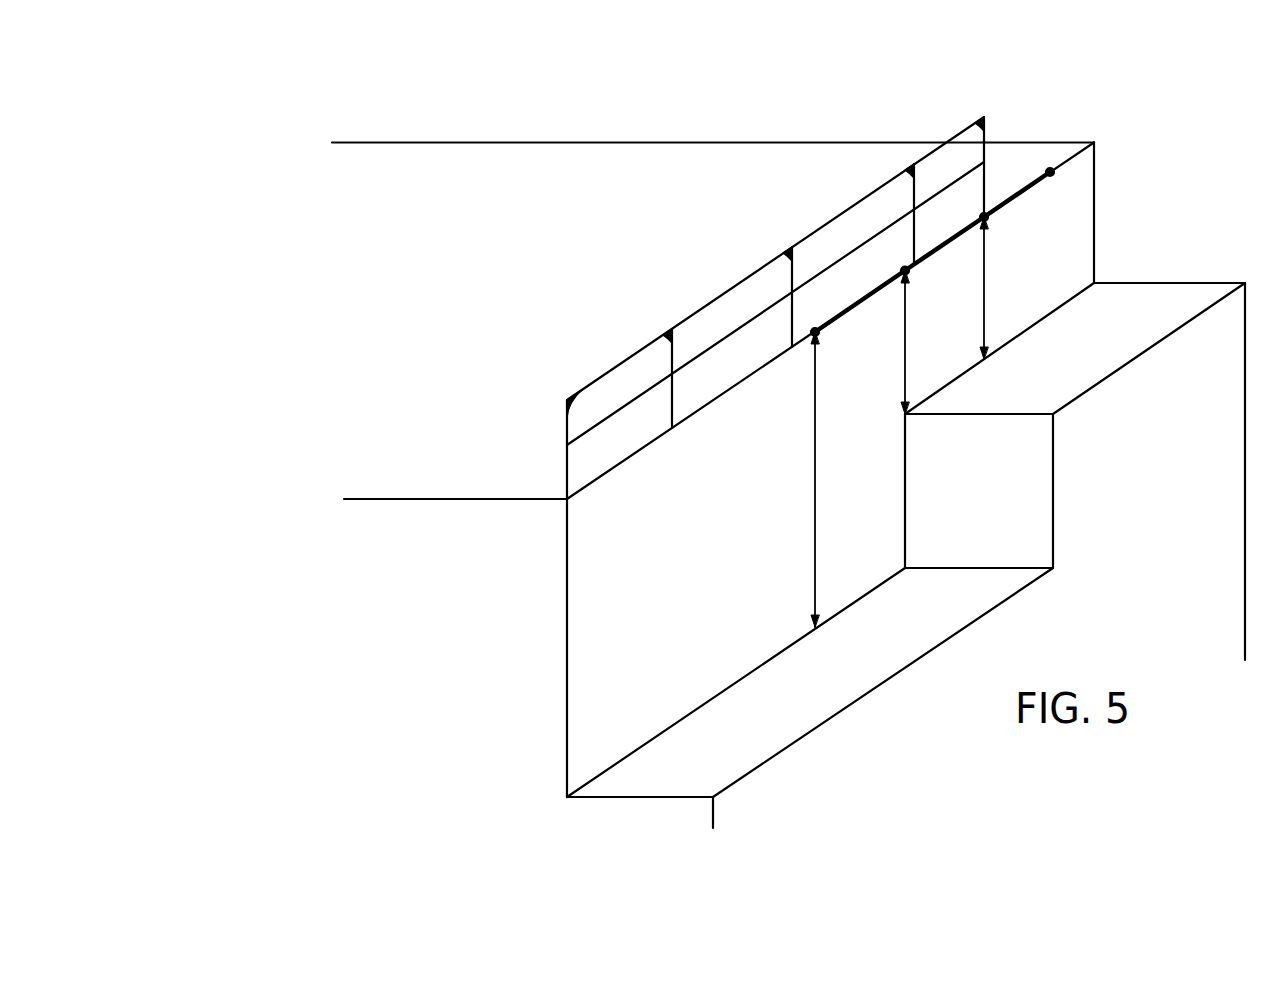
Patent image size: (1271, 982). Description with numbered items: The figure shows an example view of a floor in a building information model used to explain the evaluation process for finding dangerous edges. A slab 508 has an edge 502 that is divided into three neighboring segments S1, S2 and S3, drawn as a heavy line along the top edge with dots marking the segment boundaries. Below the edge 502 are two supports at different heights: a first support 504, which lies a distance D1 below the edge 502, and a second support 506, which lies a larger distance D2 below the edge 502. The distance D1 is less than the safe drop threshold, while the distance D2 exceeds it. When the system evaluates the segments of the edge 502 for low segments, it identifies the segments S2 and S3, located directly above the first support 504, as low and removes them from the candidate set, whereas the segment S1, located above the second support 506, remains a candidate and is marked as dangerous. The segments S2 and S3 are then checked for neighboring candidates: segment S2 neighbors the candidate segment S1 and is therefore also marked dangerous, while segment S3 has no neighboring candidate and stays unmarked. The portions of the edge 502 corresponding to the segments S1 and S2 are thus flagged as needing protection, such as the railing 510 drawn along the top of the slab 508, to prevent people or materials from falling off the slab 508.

The edge 502 is at (1068, 161).
The first support 504 is at (1145, 333).
The second support 506 is at (957, 620).
The slab 508 is at (498, 475).
The railing 510 is at (893, 177).
The segment S1 is at (860, 302).
The segment S2 is at (946, 241).
The segment S3 is at (1019, 191).
The distance D1 is at (962, 315).
The distance D2 is at (831, 479).